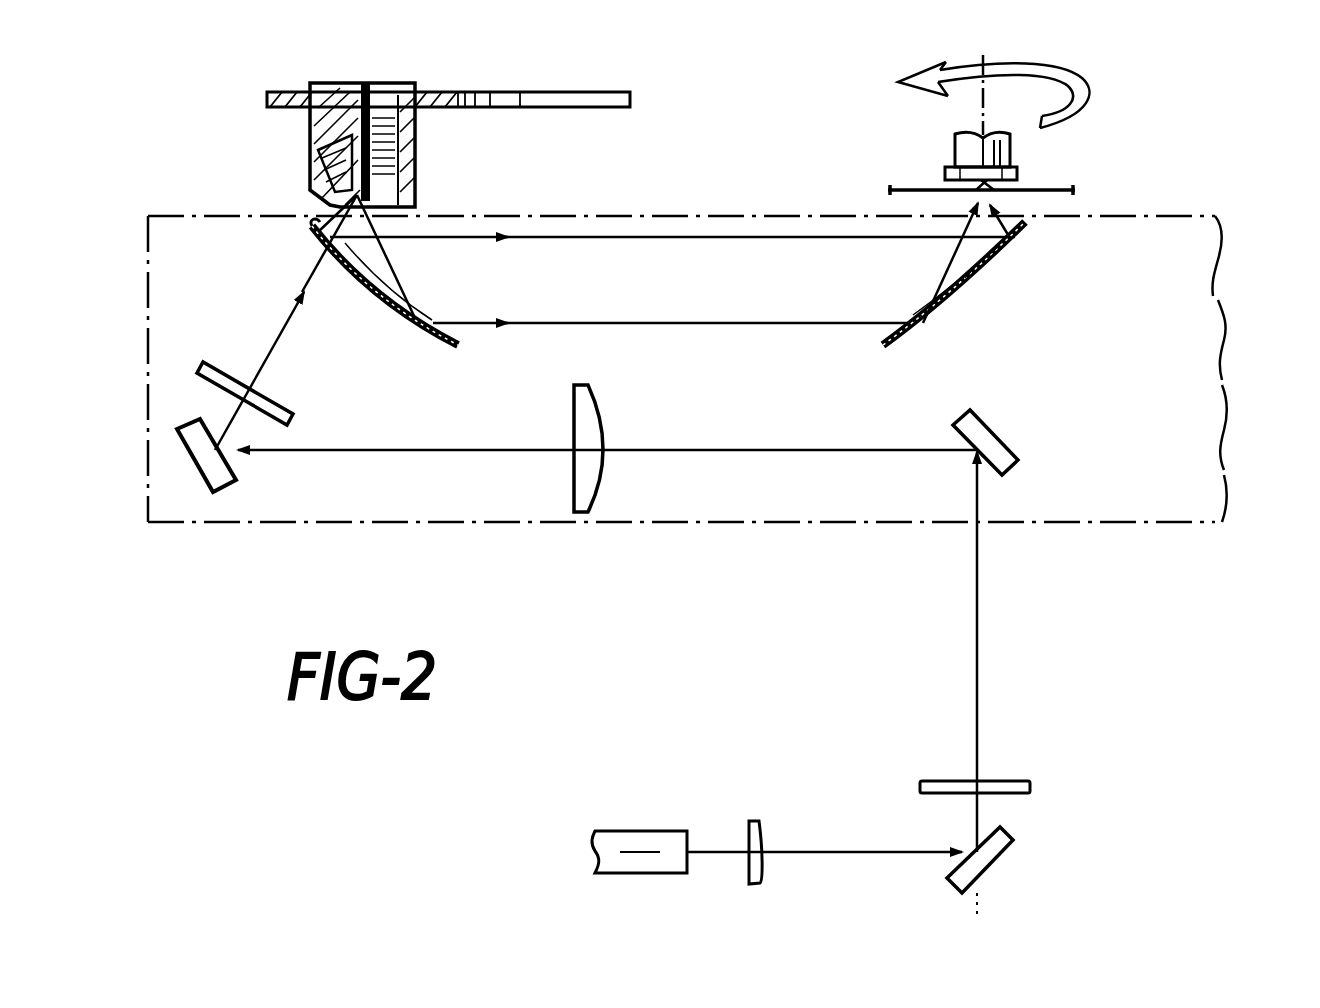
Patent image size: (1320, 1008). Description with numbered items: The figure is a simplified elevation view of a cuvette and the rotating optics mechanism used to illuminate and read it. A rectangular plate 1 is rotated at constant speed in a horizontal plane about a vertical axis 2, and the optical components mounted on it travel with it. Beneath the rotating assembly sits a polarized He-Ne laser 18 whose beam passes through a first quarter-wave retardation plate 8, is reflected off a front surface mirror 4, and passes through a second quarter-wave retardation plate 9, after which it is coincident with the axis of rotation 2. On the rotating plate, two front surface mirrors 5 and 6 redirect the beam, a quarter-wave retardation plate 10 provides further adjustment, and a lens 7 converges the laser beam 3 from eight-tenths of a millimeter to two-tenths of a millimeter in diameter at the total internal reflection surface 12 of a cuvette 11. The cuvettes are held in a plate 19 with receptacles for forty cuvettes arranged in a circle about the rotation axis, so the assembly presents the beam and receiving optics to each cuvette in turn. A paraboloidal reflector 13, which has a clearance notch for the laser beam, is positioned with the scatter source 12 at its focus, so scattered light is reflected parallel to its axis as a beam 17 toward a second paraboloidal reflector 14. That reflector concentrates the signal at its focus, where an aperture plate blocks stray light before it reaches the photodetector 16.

The rectangular plate 1 is at (1215, 216).
The vertical axis 2 is at (978, 910).
The laser beam 3 is at (470, 449).
The front surface mirror 4 is at (990, 830).
The front surface mirror 5 is at (994, 470).
The front surface mirror 6 is at (238, 478).
The lens 7 is at (604, 418).
The first quarter-wave retardation plate 8 is at (760, 820).
The second quarter-wave retardation plate 9 is at (1030, 782).
The quarter-wave retardation plate 10 is at (218, 372).
The cuvette 11 is at (415, 200).
The total internal reflection surface 12 is at (395, 168).
The paraboloidal reflector 13 is at (395, 310).
The second paraboloidal reflector 14 is at (987, 283).
The photodetector 16 is at (945, 176).
The beam 17 is at (665, 237).
The polarized He-Ne laser 18 is at (662, 828).
The plate 19 is at (620, 92).